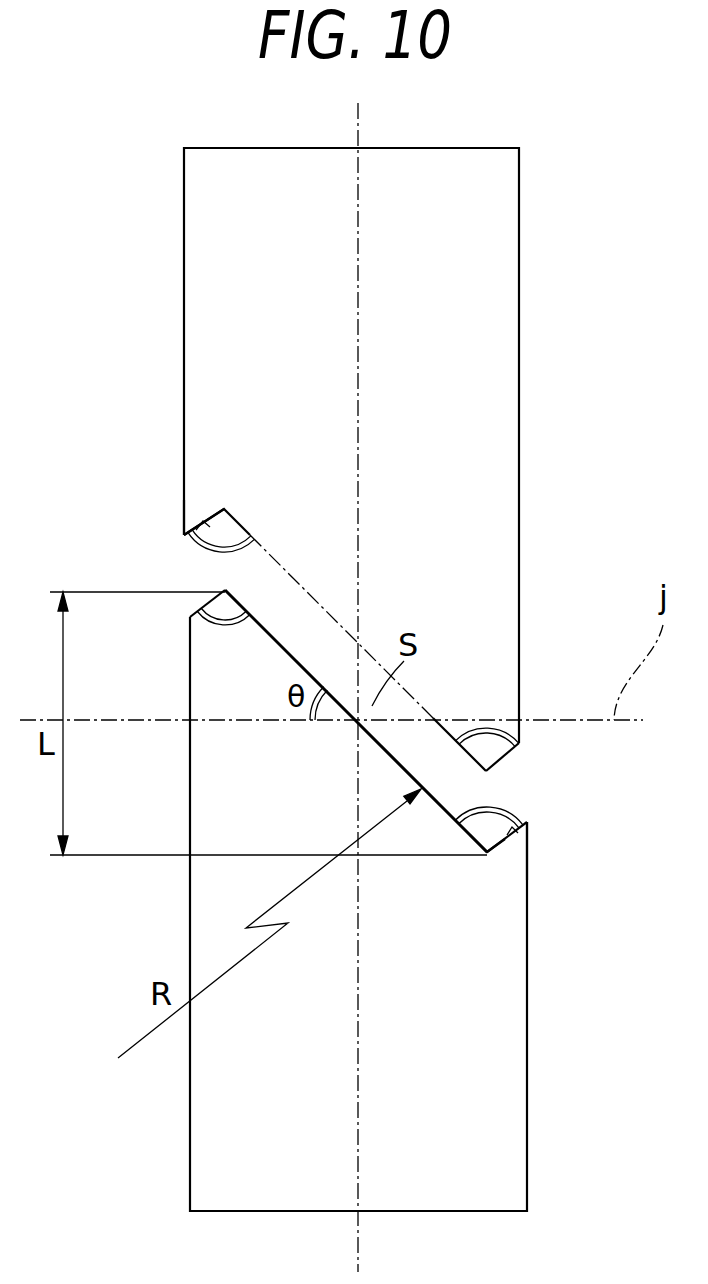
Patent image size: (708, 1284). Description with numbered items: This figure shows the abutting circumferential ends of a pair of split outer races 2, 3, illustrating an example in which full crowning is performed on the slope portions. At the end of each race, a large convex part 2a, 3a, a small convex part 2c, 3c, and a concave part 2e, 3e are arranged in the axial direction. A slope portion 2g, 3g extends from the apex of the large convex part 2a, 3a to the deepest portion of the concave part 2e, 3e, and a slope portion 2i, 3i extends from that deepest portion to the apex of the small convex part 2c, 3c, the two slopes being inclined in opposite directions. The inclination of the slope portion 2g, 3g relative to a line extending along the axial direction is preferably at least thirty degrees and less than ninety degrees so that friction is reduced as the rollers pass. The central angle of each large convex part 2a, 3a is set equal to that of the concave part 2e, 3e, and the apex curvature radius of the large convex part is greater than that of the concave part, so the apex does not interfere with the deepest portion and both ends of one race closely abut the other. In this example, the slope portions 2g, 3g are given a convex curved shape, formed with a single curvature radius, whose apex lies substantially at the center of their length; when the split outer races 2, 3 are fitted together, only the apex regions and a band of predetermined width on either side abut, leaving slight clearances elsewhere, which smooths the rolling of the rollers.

The split outer race 2 is at (543, 1027).
The split outer race 3 is at (536, 383).
The large convex part 2a is at (213, 592).
The small convex part 2c is at (528, 847).
The concave part 2e is at (497, 832).
The slope portion 2g is at (400, 767).
The slope portion 2i is at (508, 826).
The large convex part 3a is at (490, 768).
The small convex part 3c is at (187, 533).
The concave part 3e is at (223, 518).
The slope portion 3g is at (306, 604).
The slope portion 3i is at (187, 527).